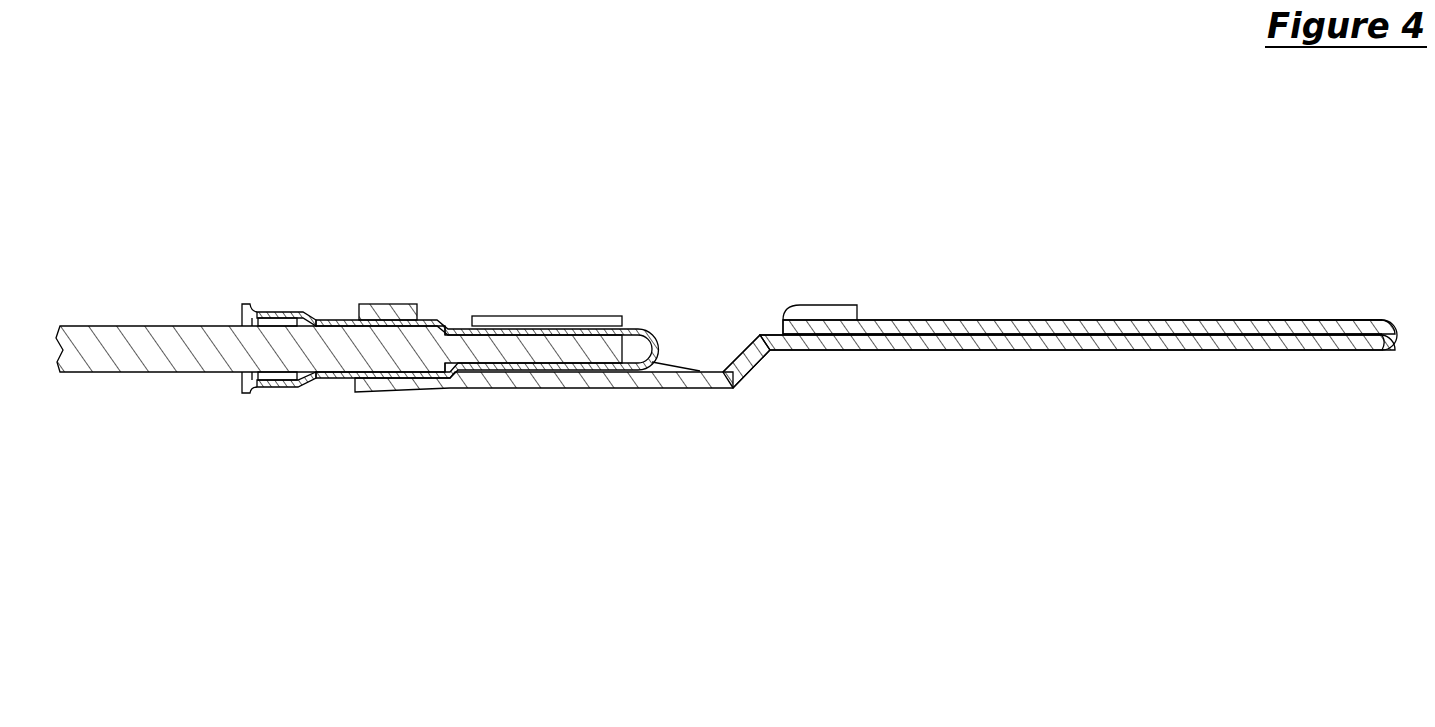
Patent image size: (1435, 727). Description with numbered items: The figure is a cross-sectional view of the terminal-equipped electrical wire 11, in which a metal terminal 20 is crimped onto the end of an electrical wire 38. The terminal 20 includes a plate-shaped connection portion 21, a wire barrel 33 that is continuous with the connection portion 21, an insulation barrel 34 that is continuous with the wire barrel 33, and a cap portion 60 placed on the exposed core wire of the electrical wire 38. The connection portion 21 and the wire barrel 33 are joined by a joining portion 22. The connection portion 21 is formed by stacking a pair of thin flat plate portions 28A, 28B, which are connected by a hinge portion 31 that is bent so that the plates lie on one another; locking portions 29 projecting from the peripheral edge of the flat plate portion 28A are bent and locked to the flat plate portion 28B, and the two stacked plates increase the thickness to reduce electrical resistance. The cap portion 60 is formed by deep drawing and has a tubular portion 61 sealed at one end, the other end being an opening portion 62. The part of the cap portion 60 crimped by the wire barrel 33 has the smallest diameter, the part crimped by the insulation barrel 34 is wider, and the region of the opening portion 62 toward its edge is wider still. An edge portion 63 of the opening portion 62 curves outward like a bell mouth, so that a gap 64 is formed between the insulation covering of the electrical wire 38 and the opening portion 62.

The connector 11 is at (1059, 293).
The terminal 20 is at (1190, 325).
The connection portion 21 is at (1268, 323).
The joining portion 22 is at (752, 367).
The flat plate portion 28A is at (920, 324).
The flat plate portion 28B is at (920, 350).
The locking portion 29 is at (830, 313).
The hinge portion 31 is at (1398, 335).
The wire barrel 33 is at (530, 318).
The insulation barrel 34 is at (383, 308).
The electrical wire 38 is at (145, 345).
The cap portion 60 is at (275, 312).
The tubular portion 61 is at (340, 380).
The opening portion 62 is at (273, 384).
The edge portion 63 is at (248, 394).
The gap 64 is at (243, 325).